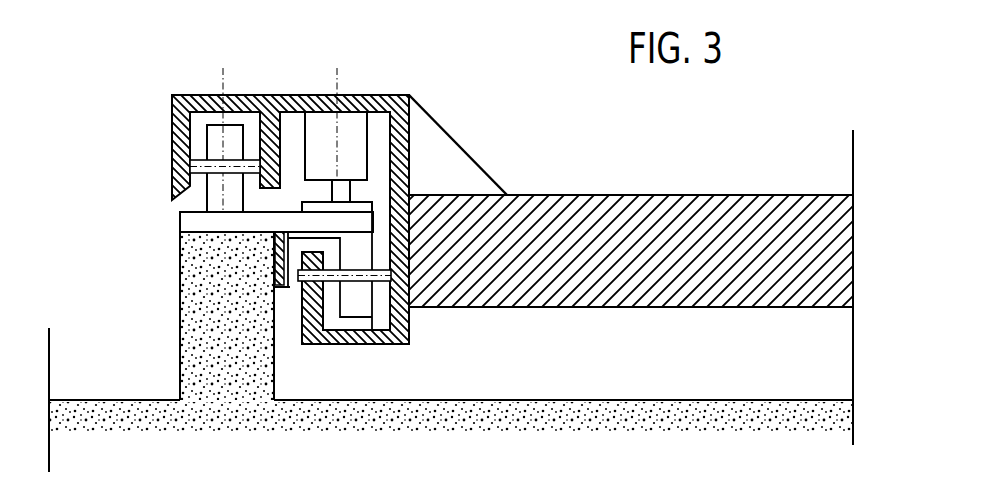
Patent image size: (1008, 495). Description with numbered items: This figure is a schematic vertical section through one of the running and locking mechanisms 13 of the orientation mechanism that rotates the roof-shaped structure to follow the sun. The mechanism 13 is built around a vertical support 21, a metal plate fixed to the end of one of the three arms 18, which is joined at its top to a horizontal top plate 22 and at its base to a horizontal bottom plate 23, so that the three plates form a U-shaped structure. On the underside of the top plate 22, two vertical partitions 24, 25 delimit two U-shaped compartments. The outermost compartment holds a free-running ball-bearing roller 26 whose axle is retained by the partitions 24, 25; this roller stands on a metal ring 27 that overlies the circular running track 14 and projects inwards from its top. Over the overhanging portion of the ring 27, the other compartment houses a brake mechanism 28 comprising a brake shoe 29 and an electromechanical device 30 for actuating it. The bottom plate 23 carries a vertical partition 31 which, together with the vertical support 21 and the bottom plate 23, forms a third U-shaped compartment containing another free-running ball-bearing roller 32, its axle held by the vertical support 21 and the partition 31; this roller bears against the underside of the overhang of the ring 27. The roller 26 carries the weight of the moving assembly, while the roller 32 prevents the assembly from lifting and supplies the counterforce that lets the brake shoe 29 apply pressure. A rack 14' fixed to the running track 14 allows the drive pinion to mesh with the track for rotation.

The running and locking mechanism 13 is at (420, 88).
The circular running track 14 is at (451, 301).
The rack 14' is at (244, 380).
The arm 18 is at (700, 194).
The vertical support 21 is at (410, 326).
The horizontal top plate 22 is at (297, 95).
The horizontal bottom plate 23 is at (372, 346).
The vertical partition 24 is at (172, 131).
The vertical partition 25 is at (252, 95).
The free-running ball-bearing roller 26 is at (211, 95).
The metal ring 27 is at (180, 222).
The brake mechanism 28 is at (378, 147).
The brake shoe 29 is at (357, 197).
The electromechanical device 30 is at (352, 95).
The vertical partition 31 is at (302, 330).
The free-running ball-bearing roller 32 is at (352, 308).